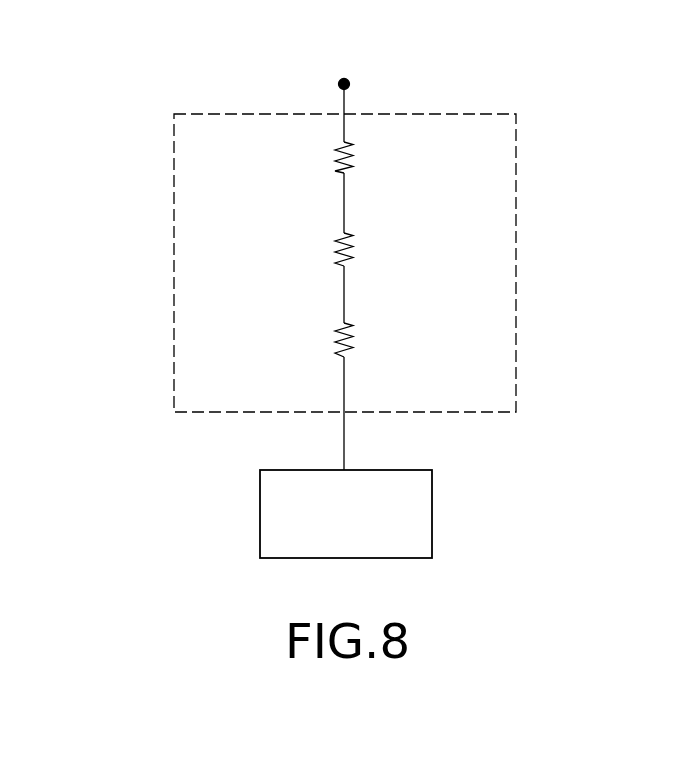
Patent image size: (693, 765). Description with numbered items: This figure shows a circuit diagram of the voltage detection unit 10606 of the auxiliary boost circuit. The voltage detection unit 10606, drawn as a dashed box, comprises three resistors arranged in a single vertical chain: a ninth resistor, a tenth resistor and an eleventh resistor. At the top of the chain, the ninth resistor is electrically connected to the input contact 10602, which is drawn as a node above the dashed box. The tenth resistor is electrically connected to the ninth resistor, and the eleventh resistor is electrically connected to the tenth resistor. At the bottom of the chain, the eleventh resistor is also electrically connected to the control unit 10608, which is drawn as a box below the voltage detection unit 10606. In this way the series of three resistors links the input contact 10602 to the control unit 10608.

The input contact 10602 is at (344, 78).
The voltage detection unit 10606 is at (510, 262).
The control unit 10608 is at (317, 475).